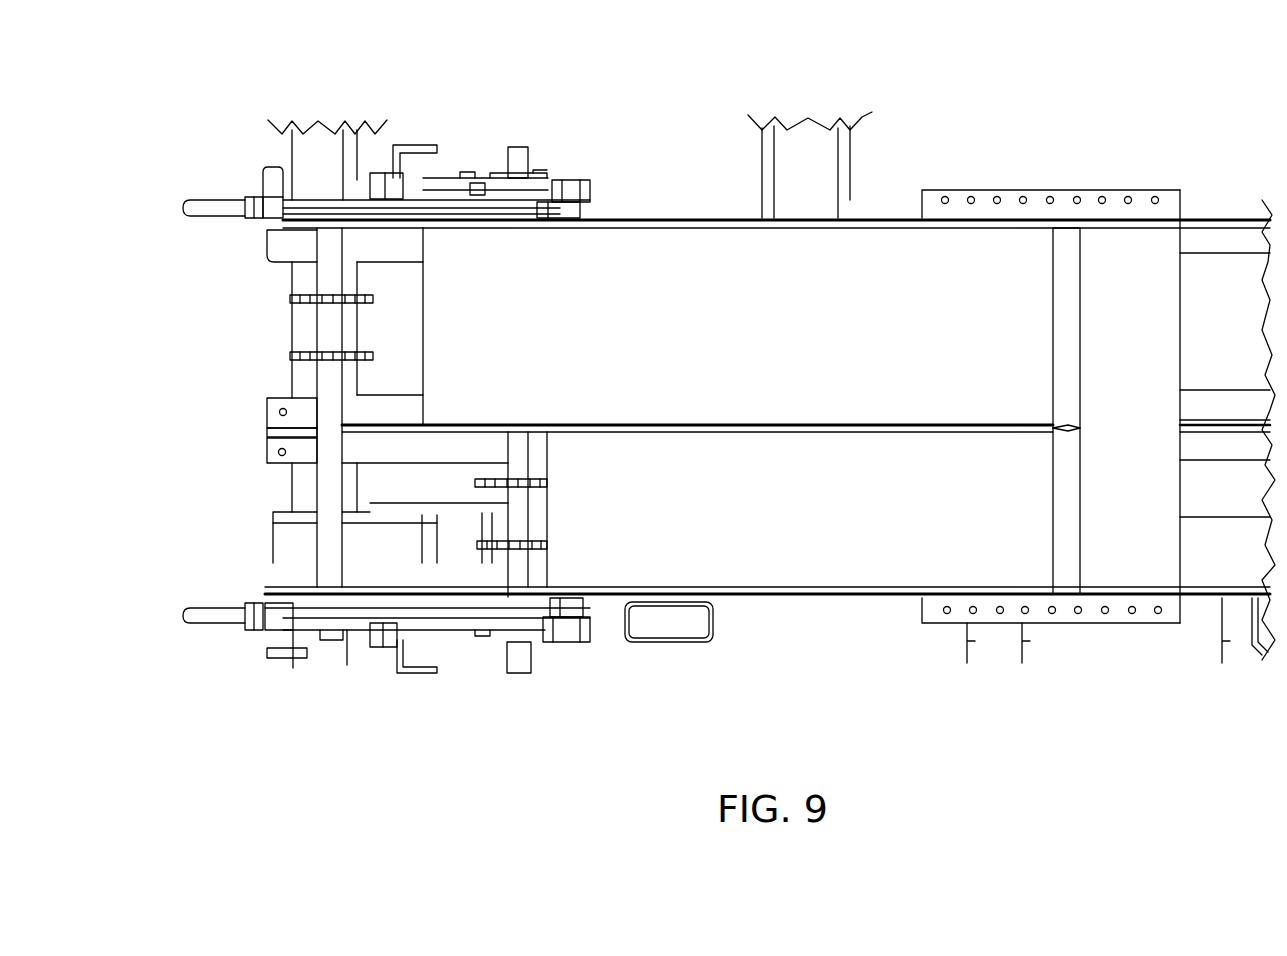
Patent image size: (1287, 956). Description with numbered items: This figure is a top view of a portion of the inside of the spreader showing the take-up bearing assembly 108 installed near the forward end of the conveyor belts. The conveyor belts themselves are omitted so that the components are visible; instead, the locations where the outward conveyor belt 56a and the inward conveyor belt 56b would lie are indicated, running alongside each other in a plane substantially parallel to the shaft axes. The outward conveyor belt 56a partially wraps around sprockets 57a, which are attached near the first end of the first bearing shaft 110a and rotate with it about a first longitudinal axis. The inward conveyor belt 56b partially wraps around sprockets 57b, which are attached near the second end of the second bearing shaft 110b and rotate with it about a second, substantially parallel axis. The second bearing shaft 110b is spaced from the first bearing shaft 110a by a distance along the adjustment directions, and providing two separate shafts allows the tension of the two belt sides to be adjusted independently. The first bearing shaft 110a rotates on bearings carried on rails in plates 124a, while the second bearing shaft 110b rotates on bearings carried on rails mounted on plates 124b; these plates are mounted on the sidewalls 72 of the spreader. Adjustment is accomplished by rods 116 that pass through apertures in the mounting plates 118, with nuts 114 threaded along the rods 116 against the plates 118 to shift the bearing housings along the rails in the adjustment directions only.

The take-up bearing assembly 108 is at (474, 124).
The nuts 114 is at (255, 197).
The rods 116 is at (200, 203).
The plates 118 is at (262, 170).
The plates 124a is at (573, 190).
The plates 124b is at (565, 213).
The sidewalls 72 is at (732, 217).
The outward conveyor belt 56a is at (767, 514).
The inward conveyor belt 56b is at (776, 326).
The sprockets 57a is at (549, 544).
The sprockets 57b is at (290, 300).
The first bearing shaft 110a is at (547, 472).
The second bearing shaft 110b is at (328, 372).